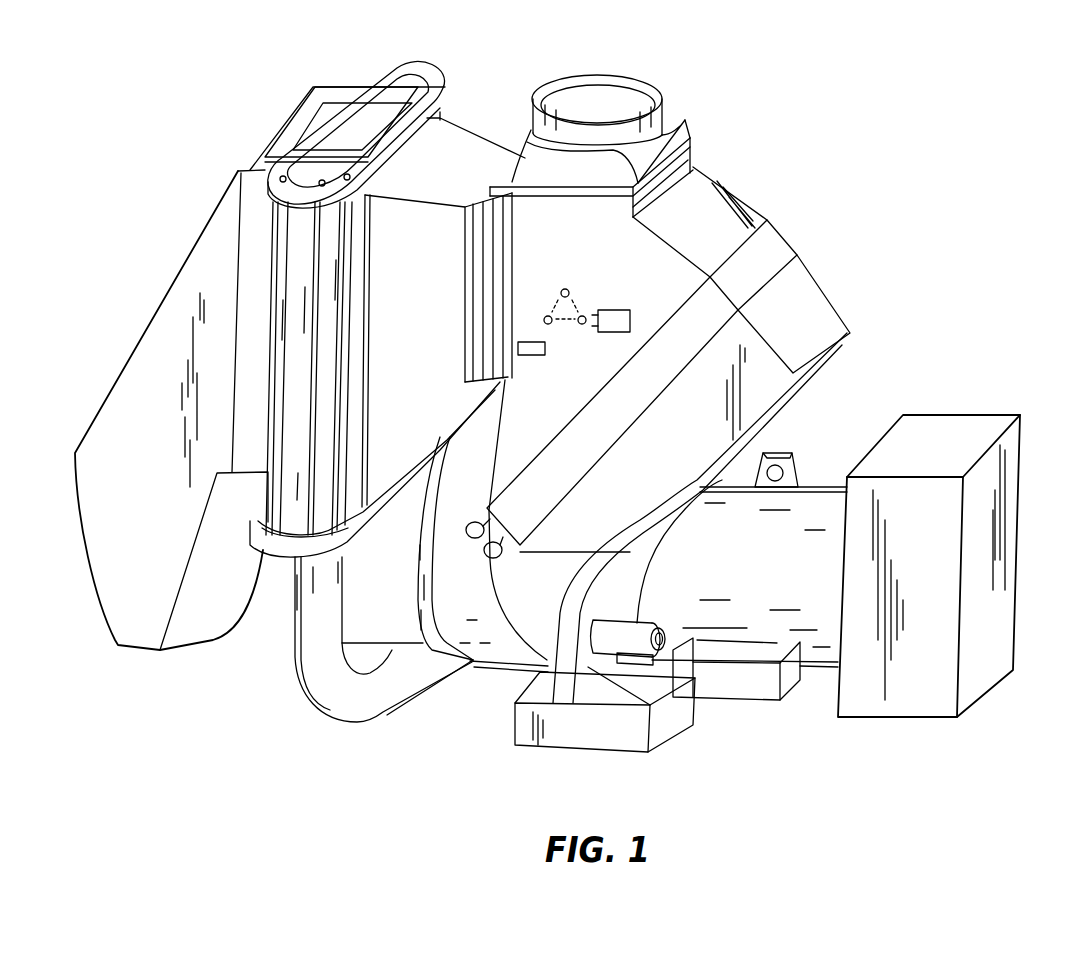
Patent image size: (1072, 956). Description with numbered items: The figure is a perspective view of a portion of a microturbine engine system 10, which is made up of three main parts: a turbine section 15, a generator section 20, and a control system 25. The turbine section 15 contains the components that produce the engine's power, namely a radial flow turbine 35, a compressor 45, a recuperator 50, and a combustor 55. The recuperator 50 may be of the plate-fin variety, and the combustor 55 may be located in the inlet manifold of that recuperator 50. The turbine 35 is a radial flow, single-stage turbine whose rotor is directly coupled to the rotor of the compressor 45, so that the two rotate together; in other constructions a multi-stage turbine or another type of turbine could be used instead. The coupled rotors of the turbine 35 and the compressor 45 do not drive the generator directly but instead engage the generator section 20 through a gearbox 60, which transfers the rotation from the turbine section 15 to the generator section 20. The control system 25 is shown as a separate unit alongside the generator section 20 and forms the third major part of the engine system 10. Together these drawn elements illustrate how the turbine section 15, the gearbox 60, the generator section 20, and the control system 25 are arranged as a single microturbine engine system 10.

The microturbine engine system 10 is at (886, 131).
The turbine section 15 is at (390, 650).
The generator section 20 is at (822, 500).
The control system 25 is at (935, 425).
The radial flow turbine 35 is at (343, 645).
The compressor 45 is at (476, 666).
The recuperator 50 is at (323, 137).
The combustor 55 is at (400, 85).
The gearbox 60 is at (515, 668).